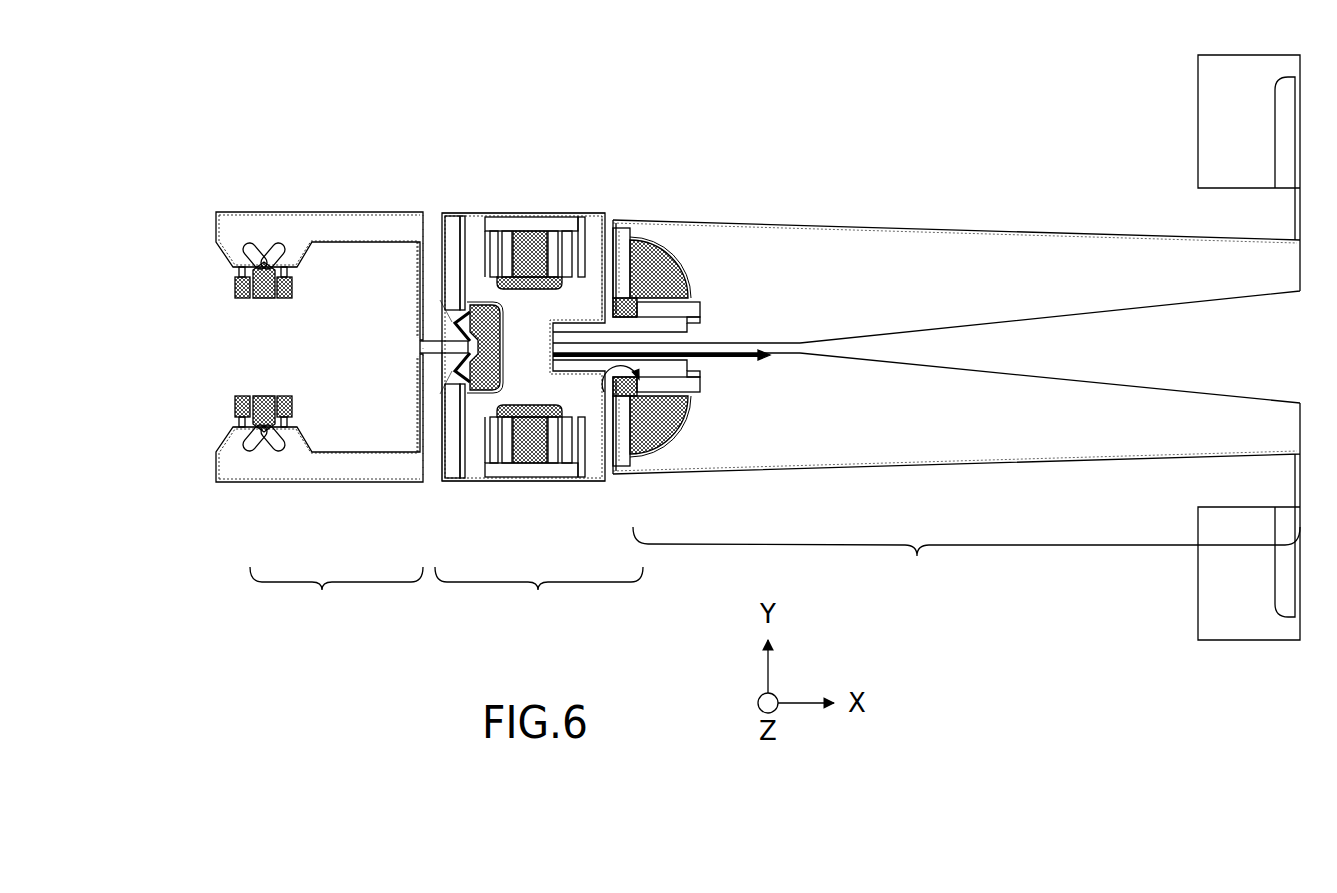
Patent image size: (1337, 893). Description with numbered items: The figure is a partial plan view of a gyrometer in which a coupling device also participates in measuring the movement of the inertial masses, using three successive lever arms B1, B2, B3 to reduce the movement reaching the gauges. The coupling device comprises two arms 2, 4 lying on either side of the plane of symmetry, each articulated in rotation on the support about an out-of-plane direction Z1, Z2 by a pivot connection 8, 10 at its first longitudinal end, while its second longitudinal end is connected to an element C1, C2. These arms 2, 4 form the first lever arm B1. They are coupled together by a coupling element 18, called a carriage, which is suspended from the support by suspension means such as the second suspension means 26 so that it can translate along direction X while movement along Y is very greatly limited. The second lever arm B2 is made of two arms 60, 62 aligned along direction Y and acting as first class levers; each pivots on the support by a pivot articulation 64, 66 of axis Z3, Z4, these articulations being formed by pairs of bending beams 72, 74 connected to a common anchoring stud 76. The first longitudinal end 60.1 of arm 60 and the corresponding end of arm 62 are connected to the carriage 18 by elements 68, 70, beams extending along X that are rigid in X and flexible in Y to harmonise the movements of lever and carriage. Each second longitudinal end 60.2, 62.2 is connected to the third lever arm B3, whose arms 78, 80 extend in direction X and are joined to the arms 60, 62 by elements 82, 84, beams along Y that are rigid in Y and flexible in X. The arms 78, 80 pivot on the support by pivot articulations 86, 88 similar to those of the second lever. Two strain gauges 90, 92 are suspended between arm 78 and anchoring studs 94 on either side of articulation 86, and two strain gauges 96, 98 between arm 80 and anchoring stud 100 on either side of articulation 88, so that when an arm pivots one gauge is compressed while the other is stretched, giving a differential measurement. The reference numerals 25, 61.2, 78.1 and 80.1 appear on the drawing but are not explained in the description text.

The arm 2 is at (950, 232).
The arm 4 is at (996, 466).
The pivot connection 8 is at (665, 253).
The pivot connection 10 is at (667, 437).
The coupling element 18 is at (568, 305).
The first sealing ring 25 is at (265, 299).
The second suspension means 26 is at (265, 395).
The arm 60 is at (444, 245).
The first longitudinal end 60.1 is at (453, 215).
The second longitudinal end 60.2 is at (420, 336).
The gap 61.2 is at (447, 420).
The arm 62 is at (433, 380).
The second longitudinal end 62.2 is at (420, 356).
The pivot articulation 64 is at (436, 324).
The pivot articulation 66 is at (425, 378).
The element 68 is at (565, 213).
The element 70 is at (552, 484).
The beams 72 is at (505, 285).
The beams 74 is at (515, 420).
The anchoring stud 76 is at (500, 355).
The arm 78 is at (298, 204).
The first sealing surface 78.1 is at (416, 228).
The arm 80 is at (295, 472).
The second sealing surface 80.1 is at (425, 478).
The element 82 is at (452, 322).
The element 84 is at (440, 373).
The pivot articulation 86 is at (208, 280).
The pivot articulation 88 is at (213, 398).
The strain gauge 90 is at (236, 270).
The strain gauge 92 is at (294, 290).
The anchoring studs 94 is at (242, 299).
The strain gauge 96 is at (236, 423).
The strain gauge 98 is at (294, 404).
The anchoring stud 100 is at (242, 394).
The out-of-plane direction Z1 is at (622, 283).
The out-of-plane direction Z2 is at (638, 450).
The axis Z3 is at (468, 262).
The axis Z4 is at (468, 435).
The first lever arm B1 is at (966, 558).
The second lever arm B2 is at (539, 595).
The third lever arm B3 is at (336, 595).
The element C1 is at (1205, 80).
The element C2 is at (1205, 617).